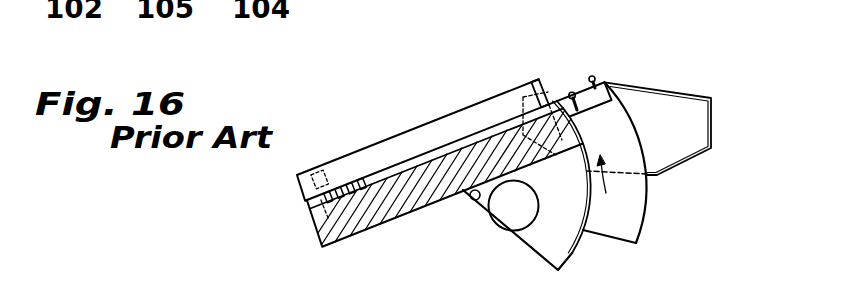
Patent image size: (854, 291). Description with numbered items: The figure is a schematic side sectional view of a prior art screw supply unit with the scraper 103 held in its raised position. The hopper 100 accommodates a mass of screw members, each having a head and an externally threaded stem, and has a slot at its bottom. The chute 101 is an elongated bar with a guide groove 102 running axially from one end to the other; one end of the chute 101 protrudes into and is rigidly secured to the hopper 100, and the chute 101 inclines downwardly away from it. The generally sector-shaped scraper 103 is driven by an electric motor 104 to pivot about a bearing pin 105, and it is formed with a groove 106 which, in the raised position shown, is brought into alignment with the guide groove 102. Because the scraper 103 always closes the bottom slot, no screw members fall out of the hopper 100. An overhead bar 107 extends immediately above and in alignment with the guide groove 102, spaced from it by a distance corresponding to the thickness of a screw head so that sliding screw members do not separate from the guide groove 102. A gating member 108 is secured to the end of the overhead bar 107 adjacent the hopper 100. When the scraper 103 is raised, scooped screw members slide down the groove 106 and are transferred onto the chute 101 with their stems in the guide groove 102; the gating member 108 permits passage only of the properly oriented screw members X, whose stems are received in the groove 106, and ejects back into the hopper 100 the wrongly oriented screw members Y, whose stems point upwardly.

The hopper 100 is at (687, 142).
The chute 101 is at (417, 200).
The guide groove 102 is at (408, 175).
The scraper 103 is at (635, 212).
The electric motor 104 is at (528, 212).
The bearing pin 105 is at (468, 205).
The groove 106 is at (616, 89).
The overhead bar 107 is at (471, 119).
The gating member 108 is at (547, 88).
The screw members having proper orientation X is at (574, 93).
The screw members having wrong orientation Y is at (597, 78).